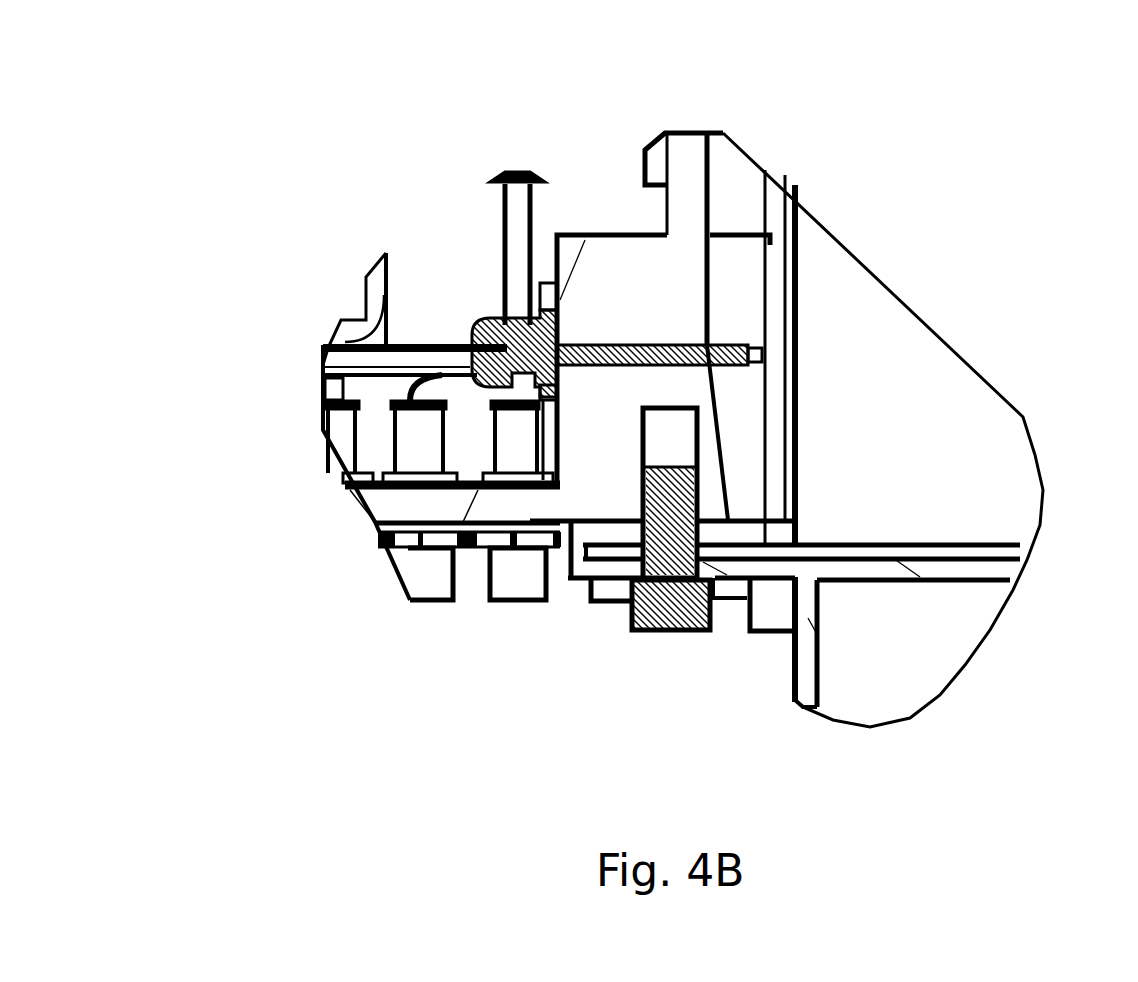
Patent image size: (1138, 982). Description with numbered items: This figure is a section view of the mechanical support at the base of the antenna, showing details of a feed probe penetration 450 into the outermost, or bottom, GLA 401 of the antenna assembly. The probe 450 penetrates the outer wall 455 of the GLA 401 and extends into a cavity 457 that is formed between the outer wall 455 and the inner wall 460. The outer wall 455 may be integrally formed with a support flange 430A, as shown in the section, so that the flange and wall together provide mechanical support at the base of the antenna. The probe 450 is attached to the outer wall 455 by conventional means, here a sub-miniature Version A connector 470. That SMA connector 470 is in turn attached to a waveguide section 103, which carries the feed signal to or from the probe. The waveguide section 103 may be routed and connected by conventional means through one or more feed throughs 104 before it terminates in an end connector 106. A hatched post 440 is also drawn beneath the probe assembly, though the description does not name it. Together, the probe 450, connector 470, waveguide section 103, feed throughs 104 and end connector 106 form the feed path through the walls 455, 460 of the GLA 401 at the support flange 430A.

The GLA 401 is at (805, 114).
The outer wall 455 is at (683, 148).
The cavity 457 is at (758, 412).
The inner wall 460 is at (793, 478).
The feed probe penetration 450 is at (758, 348).
The waveguide section 103 is at (418, 355).
The SMA connector 470 is at (490, 322).
The feed throughs 104 is at (420, 442).
The support flange 430A is at (383, 508).
The end connector 106 is at (427, 580).
The post 440 is at (670, 613).